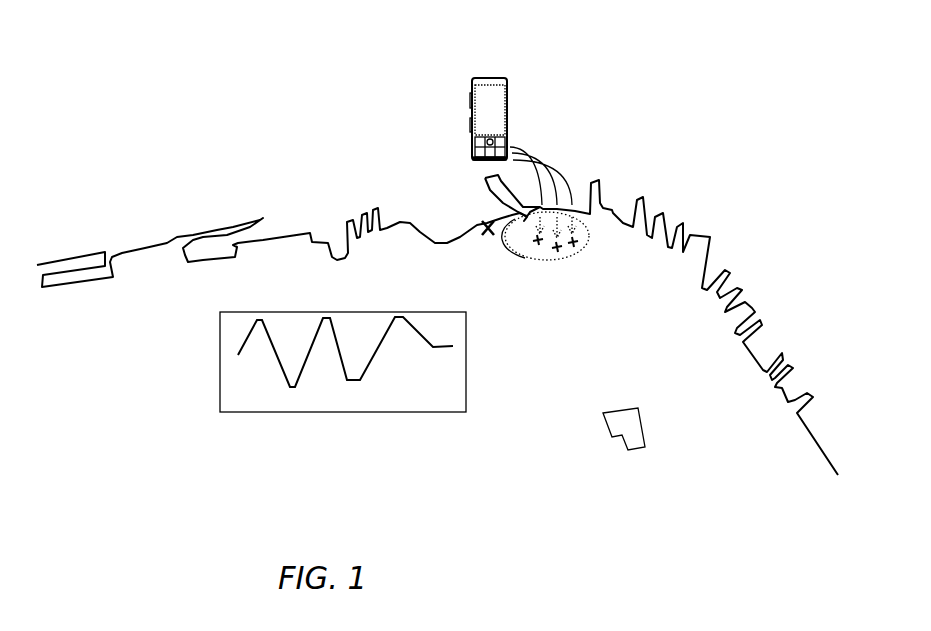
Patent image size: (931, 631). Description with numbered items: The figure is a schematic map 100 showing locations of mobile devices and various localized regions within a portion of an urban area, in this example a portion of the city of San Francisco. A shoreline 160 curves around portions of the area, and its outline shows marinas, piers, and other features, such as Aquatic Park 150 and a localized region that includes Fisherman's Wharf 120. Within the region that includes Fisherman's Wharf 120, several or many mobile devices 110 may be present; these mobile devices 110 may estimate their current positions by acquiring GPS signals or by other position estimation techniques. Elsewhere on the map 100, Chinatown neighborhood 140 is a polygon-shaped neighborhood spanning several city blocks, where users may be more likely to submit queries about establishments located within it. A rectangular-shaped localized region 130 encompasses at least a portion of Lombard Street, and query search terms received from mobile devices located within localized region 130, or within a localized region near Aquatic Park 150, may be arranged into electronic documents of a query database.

The map 100 is at (59, 42).
The mobile devices 110 is at (471, 107).
The Fisherman's Wharf 120 is at (575, 290).
The localized region 130 is at (337, 407).
The Chinatown neighborhood 140 is at (615, 435).
The Aquatic Park 150 is at (478, 223).
The shoreline 160 is at (743, 234).